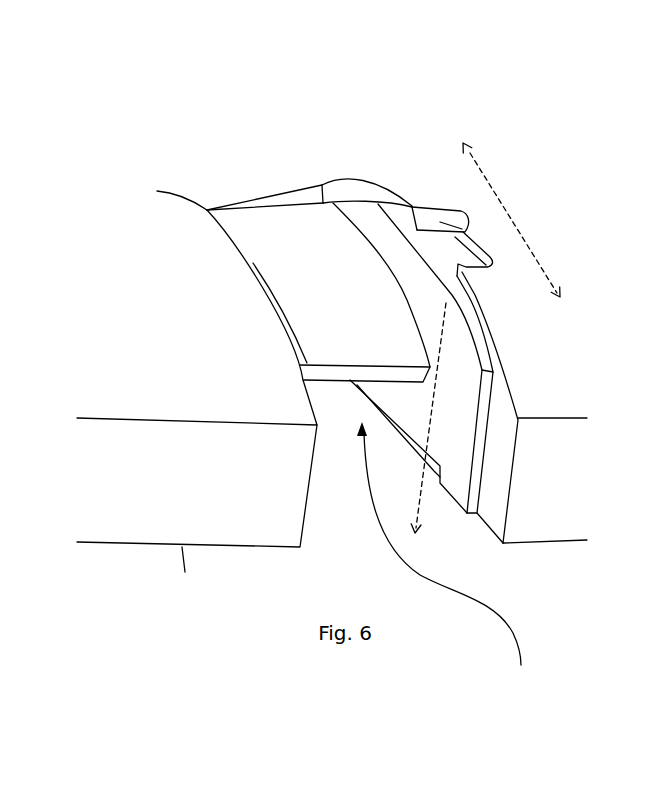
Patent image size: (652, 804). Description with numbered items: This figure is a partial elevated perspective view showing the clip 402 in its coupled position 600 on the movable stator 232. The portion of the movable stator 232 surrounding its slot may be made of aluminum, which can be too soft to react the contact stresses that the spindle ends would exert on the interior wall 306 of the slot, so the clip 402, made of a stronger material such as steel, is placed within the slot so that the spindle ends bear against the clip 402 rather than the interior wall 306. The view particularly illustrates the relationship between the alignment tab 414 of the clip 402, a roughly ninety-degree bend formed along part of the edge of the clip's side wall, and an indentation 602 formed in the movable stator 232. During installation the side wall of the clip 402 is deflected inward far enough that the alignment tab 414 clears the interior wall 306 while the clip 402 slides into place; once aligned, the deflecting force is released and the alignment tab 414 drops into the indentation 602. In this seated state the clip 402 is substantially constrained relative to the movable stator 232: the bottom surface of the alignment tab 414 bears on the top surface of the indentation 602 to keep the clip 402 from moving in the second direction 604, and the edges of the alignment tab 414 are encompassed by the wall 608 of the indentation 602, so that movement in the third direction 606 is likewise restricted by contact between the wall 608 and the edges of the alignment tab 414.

The coupled position 600 is at (160, 134).
The movable stator 232 is at (170, 357).
The interior wall 306 is at (497, 458).
The alignment tab 414 is at (440, 248).
The second direction 604 is at (427, 498).
The clip 402 is at (446, 555).
The wall 608 is at (462, 231).
The third direction 606 is at (497, 195).
The indentation 602 is at (485, 239).